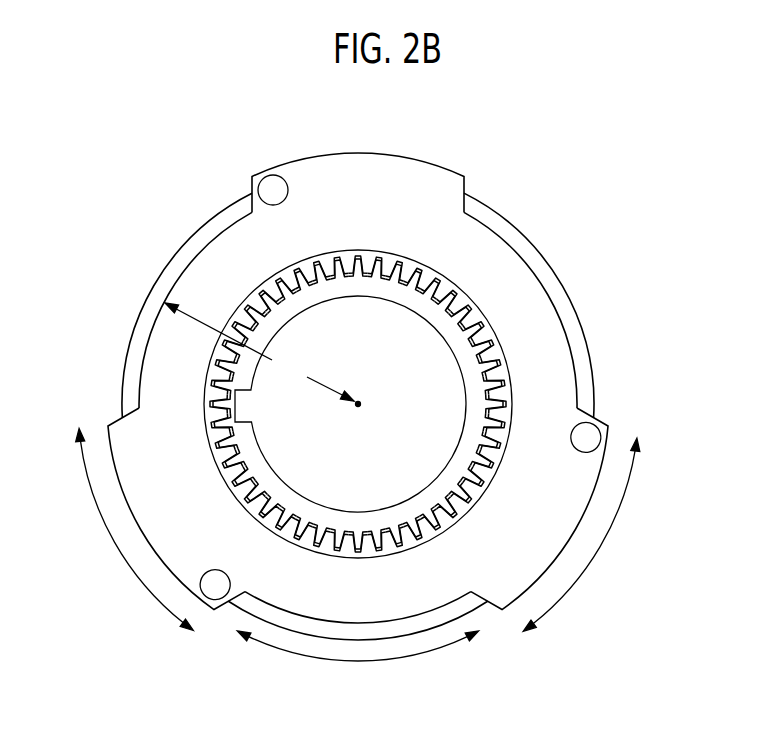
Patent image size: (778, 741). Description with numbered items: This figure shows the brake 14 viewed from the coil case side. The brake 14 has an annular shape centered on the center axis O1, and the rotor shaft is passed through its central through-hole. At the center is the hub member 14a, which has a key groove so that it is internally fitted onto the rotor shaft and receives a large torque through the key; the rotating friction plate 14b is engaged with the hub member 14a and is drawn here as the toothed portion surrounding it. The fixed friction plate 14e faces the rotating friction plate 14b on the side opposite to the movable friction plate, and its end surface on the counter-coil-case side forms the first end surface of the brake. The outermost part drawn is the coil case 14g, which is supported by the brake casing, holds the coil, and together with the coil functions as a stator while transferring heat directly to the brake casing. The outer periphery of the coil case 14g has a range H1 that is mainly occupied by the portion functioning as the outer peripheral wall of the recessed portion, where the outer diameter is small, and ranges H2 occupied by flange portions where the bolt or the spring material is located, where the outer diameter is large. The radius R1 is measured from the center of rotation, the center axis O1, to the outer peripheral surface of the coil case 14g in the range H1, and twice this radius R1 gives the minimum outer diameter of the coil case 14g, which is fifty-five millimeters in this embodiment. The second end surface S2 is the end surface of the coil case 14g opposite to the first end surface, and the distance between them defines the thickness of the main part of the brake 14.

The brake 14 is at (351, 414).
The hub member 14a is at (418, 376).
The rotating friction plate 14b is at (502, 363).
The fixed friction plate 14e is at (587, 357).
The coil case 14g is at (434, 170).
The second end surface S2 is at (170, 383).
The minimum outer radius R1 is at (259, 352).
The center axis O1 is at (368, 422).
The range of small outer diameter H1 is at (357, 665).
The range of large outer diameter H2 is at (359, 529).